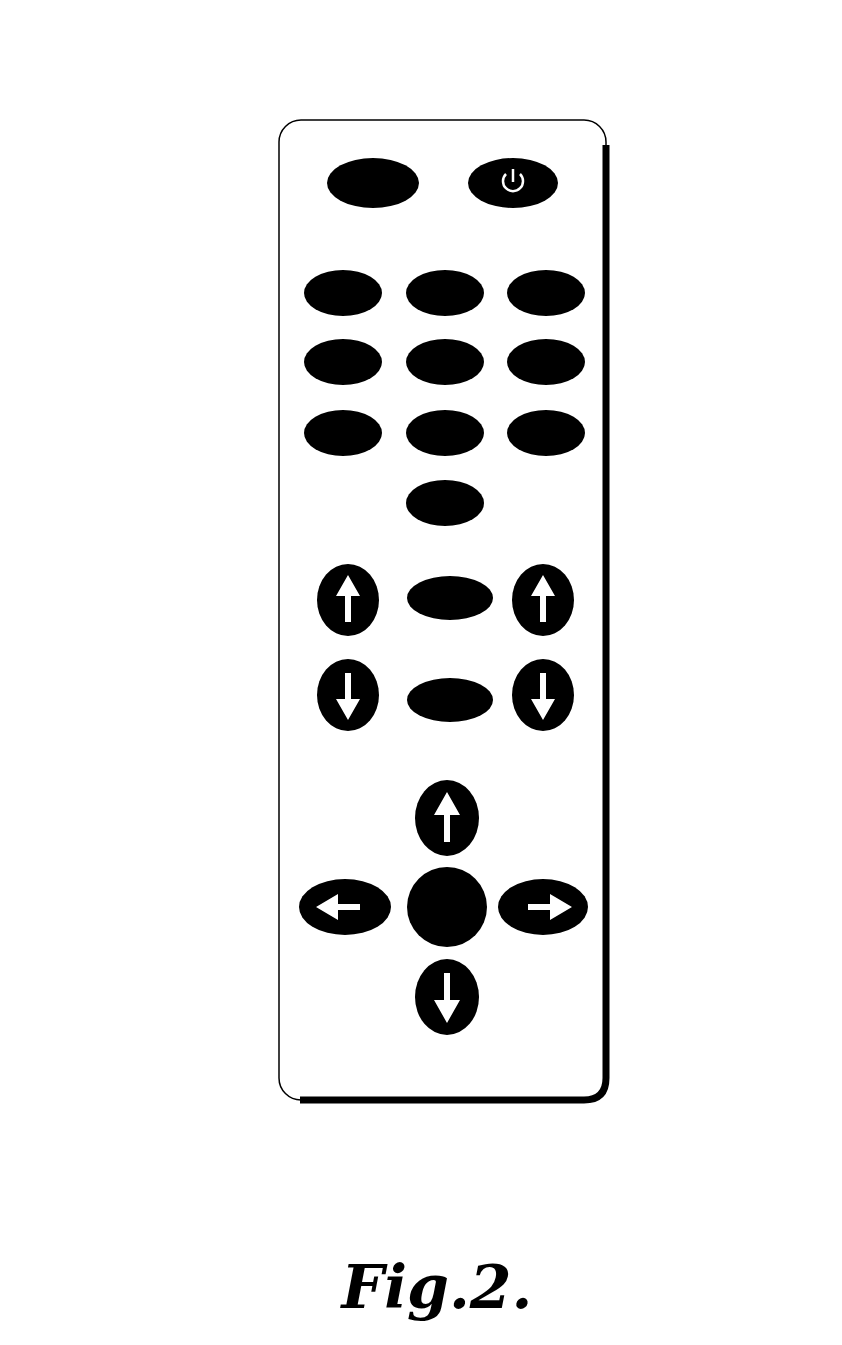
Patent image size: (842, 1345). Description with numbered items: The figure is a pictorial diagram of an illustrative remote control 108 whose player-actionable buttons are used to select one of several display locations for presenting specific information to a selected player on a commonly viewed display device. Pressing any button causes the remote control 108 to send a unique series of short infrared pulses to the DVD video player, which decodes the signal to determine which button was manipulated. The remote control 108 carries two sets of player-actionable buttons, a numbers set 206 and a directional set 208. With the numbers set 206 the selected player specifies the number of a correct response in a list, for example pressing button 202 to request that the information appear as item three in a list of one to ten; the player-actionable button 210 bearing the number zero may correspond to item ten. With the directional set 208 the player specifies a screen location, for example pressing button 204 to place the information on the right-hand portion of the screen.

The remote control 108 is at (185, 84).
The button 202 is at (570, 268).
The button 204 is at (562, 880).
The numbers set of player-actionable buttons 206 is at (312, 527).
The directional set of player-actionable buttons 208 is at (340, 1047).
The player-actionable button 210 is at (483, 500).